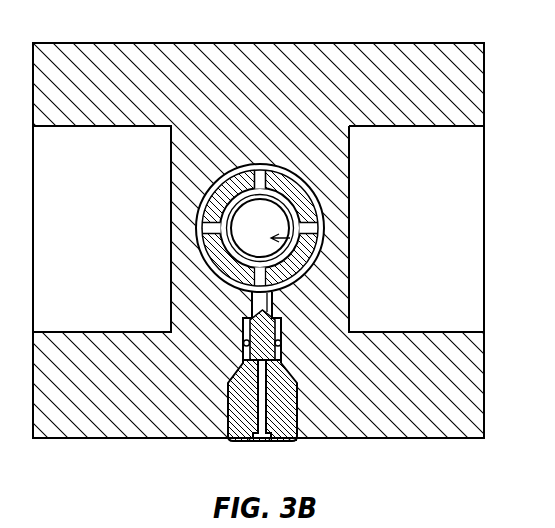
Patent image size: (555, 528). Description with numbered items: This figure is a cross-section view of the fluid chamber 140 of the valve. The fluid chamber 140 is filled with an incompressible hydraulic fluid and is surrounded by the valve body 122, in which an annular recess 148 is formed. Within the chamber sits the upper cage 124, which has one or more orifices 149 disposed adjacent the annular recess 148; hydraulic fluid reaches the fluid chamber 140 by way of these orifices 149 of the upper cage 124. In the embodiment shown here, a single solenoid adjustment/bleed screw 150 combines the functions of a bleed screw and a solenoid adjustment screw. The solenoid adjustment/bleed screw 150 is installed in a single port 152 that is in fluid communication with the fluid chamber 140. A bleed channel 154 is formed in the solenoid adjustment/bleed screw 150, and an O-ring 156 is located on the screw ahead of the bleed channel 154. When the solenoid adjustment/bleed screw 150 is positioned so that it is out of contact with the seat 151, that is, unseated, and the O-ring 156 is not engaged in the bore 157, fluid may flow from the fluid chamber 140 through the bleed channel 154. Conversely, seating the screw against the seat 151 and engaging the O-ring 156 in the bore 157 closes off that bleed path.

The valve body 122 is at (374, 43).
The upper cage 124 is at (300, 195).
The fluid chamber 140 is at (323, 248).
The annular recess 148 is at (210, 190).
The orifice 149 is at (252, 170).
The solenoid adjustment/bleed screw 150 is at (230, 412).
The seat 151 is at (281, 322).
The port 152 is at (270, 303).
The bleed channel 154 is at (278, 362).
The O-ring 156 is at (245, 345).
The bore 157 is at (281, 344).